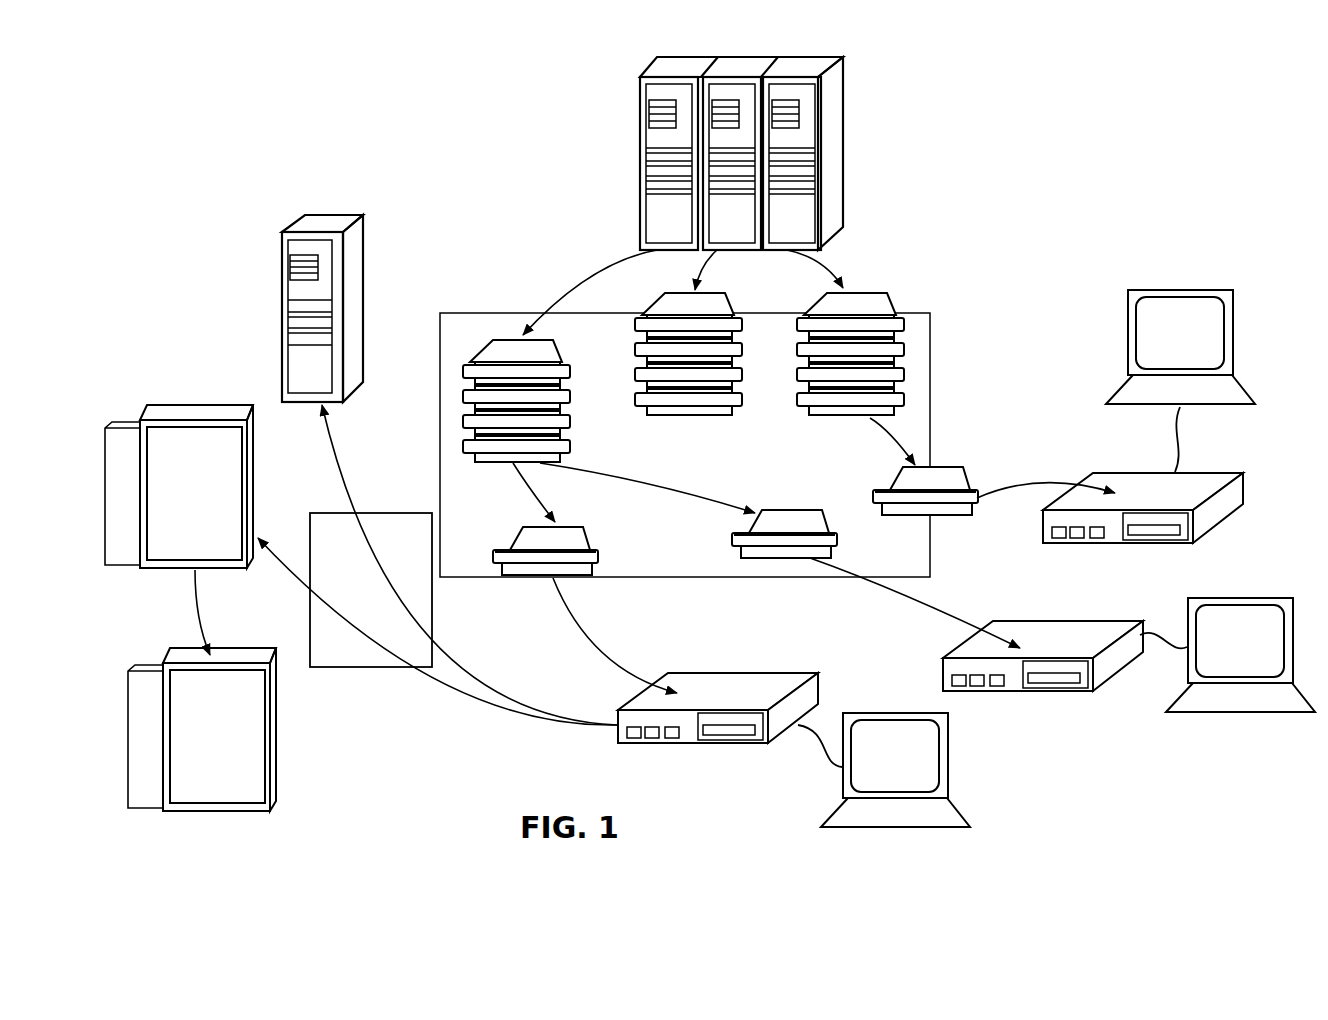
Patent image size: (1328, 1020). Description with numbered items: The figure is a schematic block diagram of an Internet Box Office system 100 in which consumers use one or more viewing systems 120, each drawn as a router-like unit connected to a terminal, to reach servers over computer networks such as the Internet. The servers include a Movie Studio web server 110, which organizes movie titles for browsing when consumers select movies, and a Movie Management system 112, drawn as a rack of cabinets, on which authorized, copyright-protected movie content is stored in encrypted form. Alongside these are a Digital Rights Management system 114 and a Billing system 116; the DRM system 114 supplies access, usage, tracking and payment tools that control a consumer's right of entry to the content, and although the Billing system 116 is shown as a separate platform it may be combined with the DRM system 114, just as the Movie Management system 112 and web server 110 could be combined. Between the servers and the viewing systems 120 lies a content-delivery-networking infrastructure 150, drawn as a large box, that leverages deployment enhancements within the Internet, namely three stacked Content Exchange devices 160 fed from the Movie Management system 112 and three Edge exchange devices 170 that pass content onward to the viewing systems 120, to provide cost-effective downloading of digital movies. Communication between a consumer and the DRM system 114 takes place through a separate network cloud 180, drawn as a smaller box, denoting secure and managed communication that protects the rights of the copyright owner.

The Internet Box Office (IBO) system 100 is at (151, 262).
The Movie Studio web server 110 is at (292, 226).
The Movie Management system 112 is at (843, 130).
The Digital Rights Management (DRM) system 114 is at (122, 420).
The Billing system 116 is at (128, 695).
The viewing system 120 is at (765, 775).
The content-delivery-networking (CDN) infrastructure 150 is at (968, 297).
The Content Exchange (CX) device 160 is at (558, 338).
The Edge exchange (X) device 170 is at (594, 532).
The network cloud 180 is at (382, 510).